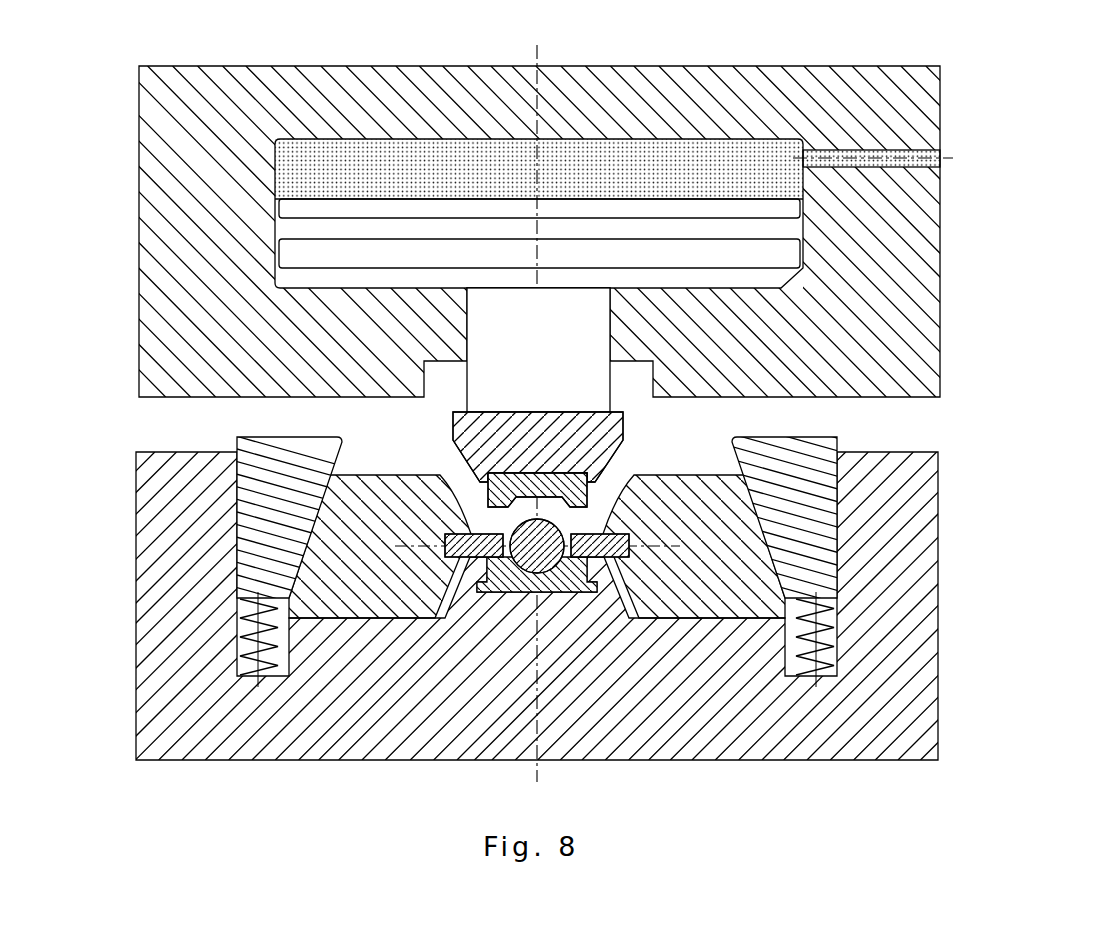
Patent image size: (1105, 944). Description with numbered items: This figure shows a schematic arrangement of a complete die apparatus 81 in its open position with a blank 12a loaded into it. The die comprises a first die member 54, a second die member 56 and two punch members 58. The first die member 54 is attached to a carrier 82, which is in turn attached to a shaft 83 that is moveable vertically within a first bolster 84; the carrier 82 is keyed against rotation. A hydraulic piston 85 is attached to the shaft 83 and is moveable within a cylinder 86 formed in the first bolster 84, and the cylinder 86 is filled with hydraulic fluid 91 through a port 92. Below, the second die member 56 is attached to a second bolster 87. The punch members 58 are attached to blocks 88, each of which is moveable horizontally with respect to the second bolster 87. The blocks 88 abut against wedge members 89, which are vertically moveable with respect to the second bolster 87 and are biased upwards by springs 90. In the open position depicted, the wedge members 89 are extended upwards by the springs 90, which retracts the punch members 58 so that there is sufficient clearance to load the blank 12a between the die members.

The die apparatus 81 is at (552, 411).
The carrier 82 is at (617, 431).
The shaft 83 is at (475, 381).
The first bolster 84 is at (927, 249).
The hydraulic piston 85 is at (650, 208).
The cylinder 86 is at (275, 188).
The second bolster 87 is at (927, 582).
The blocks 88 is at (385, 607).
The wedge members 89 is at (263, 457).
The springs 90 is at (250, 636).
The hydraulic fluid 91 is at (355, 165).
The port 92 is at (930, 157).
The blank 12a is at (518, 530).
The first die member 54 is at (580, 500).
The second die member 56 is at (568, 588).
The punch members 58 is at (448, 533).